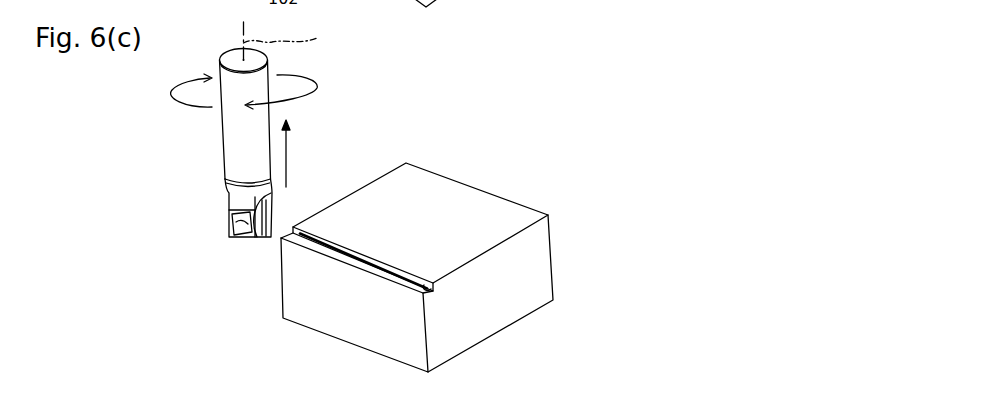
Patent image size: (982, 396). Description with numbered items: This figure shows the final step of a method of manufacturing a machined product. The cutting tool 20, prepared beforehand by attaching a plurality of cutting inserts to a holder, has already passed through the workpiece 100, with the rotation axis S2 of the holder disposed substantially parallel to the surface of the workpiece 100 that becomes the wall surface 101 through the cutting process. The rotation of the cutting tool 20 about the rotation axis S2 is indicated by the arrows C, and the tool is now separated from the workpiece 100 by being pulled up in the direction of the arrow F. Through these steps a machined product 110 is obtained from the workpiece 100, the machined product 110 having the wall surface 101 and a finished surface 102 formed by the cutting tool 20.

The cutting tool 20 is at (211, 57).
The rotation axis S2 is at (294, 38).
The rotation direction C is at (242, 91).
The arrow F is at (293, 153).
The workpiece 100 is at (523, 267).
The machined product 110 is at (523, 267).
The wall surface 101 is at (430, 291).
The finished surface 102 is at (409, 276).